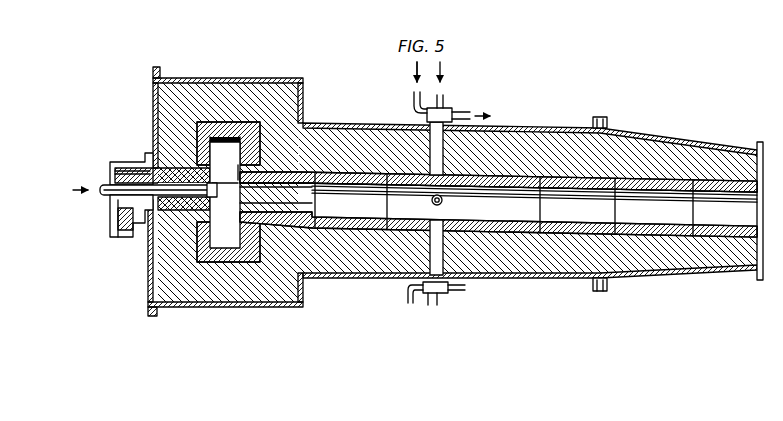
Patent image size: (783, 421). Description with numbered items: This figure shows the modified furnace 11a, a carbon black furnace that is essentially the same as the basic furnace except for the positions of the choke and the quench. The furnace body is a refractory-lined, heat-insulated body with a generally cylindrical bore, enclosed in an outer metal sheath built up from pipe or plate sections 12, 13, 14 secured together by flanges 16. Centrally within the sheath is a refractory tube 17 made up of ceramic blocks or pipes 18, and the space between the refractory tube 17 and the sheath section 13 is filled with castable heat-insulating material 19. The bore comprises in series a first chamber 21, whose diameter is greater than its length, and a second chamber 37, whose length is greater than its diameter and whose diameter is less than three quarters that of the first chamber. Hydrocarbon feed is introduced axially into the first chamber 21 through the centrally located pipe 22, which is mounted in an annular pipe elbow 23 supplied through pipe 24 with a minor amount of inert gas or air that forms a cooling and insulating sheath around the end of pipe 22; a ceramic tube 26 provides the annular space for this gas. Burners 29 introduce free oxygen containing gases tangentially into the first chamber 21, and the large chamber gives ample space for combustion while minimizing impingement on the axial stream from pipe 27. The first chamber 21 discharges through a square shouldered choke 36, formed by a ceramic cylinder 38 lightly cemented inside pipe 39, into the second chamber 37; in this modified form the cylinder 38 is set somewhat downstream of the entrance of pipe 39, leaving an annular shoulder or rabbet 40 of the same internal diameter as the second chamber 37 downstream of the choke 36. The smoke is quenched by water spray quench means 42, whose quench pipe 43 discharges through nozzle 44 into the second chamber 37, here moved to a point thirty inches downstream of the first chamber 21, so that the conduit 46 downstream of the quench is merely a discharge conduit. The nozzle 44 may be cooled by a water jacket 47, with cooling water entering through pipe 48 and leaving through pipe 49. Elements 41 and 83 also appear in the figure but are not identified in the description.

The modified furnace 11a is at (503, 128).
The metal sheath section 12 is at (153, 120).
The metal sheath section 13 is at (322, 134).
The metal sheath section 14 is at (678, 140).
The flanges 16 is at (596, 118).
The refractory tube 17 is at (514, 160).
The ceramic blocks 18 is at (454, 226).
The castable heat-insulating material 19 is at (320, 128).
The first chamber 21 is at (236, 236).
The hydrocarbon feed pipe 22 is at (103, 187).
The annular pipe elbow 23 is at (125, 168).
The gas supply pipe 24 is at (112, 222).
The ceramic tube 26 is at (160, 212).
The pipe 27 is at (225, 201).
The burners 29 is at (223, 142).
The choke 36 is at (288, 205).
The second chamber 37 is at (380, 210).
The square shouldered ceramic cylinder 38 is at (300, 220).
The pipe 39 is at (265, 226).
The annular shoulder or rabbet 40 is at (240, 190).
The sleeve joint 41 is at (342, 218).
The water spray quench means 42 is at (453, 109).
The water spray quench pipe 43 is at (446, 108).
The quench nozzle 44 is at (431, 201).
The discharge conduit 46 is at (661, 217).
The water jacket 47 is at (430, 152).
The cooling water inlet pipe 48 is at (413, 103).
The cooling water outlet pipe 49 is at (458, 112).
The guide block base 83 is at (238, 258).